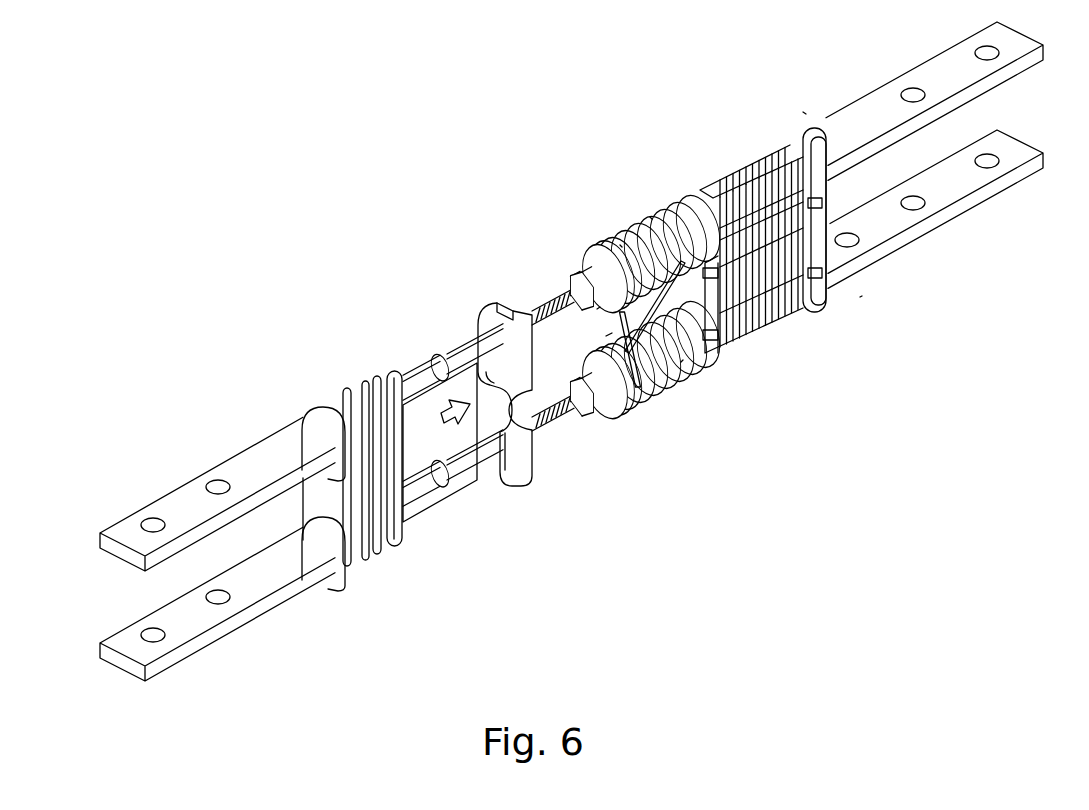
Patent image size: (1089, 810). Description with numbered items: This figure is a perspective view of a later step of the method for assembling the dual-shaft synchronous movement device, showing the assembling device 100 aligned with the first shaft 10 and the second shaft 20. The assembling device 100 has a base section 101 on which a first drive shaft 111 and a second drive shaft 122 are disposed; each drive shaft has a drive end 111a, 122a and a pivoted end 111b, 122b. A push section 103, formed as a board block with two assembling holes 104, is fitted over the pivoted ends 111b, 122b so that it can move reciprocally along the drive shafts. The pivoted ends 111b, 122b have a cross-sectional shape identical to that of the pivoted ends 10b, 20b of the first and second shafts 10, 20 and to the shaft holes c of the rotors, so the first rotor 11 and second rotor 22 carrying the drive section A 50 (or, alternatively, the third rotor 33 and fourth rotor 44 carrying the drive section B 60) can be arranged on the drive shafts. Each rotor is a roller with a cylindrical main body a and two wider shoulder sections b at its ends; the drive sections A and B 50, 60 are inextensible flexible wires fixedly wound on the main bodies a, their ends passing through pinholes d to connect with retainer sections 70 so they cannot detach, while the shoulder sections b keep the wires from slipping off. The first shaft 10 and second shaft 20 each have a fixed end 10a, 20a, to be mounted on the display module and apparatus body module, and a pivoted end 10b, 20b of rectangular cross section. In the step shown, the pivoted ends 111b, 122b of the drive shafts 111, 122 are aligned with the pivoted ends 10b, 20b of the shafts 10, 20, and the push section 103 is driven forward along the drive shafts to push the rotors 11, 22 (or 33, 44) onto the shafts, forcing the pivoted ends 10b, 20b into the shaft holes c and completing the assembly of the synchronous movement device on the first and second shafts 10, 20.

The assembling device 100 is at (300, 383).
The base section 101 is at (368, 567).
The push section 103 is at (538, 472).
The assembling holes 104 is at (500, 308).
The first drive shaft 111 is at (417, 370).
The drive end of first drive shaft 111a is at (237, 467).
The pivoted end of first drive shaft 111b is at (467, 345).
The second drive shaft 122 is at (428, 497).
The drive end of second drive shaft 122a is at (247, 620).
The pivoted end of second drive shaft 122b is at (476, 466).
The first shaft 10 is at (803, 112).
The fixed end of first shaft 10a is at (860, 108).
The pivoted end of first shaft 10b is at (578, 285).
The first rotor 11 is at (600, 230).
The second shaft 20 is at (860, 297).
The fixed end of second shaft 20a is at (903, 245).
The pivoted end of second shaft 20b is at (605, 410).
The second rotor 22 is at (634, 431).
The third rotor 33 is at (677, 192).
The fourth rotor 44 is at (692, 400).
The drive section A 50 is at (606, 336).
The drive section B 60 is at (666, 297).
The retainer sections 70 is at (652, 395).
The main body a is at (620, 245).
The shoulder sections b is at (650, 217).
The shaft hole c is at (585, 272).
The pinholes d is at (597, 309).